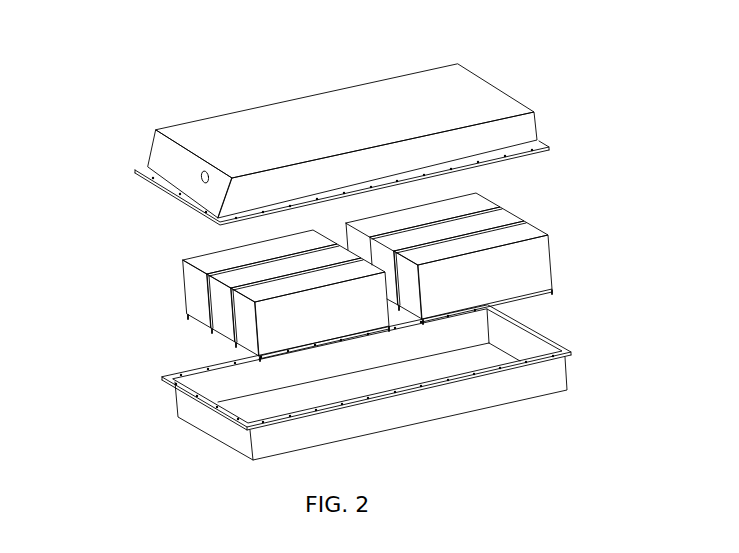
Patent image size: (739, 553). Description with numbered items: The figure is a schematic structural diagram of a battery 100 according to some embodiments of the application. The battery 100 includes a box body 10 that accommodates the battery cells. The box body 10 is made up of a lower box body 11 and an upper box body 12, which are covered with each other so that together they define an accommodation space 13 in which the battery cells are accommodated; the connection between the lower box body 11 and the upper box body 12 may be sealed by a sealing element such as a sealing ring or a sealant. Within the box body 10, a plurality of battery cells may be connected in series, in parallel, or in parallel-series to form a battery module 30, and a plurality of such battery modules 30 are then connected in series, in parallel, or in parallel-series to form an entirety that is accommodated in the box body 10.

The battery 100 is at (335, 48).
The box body 10 is at (92, 272).
The lower box body 11 is at (175, 396).
The upper box body 12 is at (185, 173).
The accommodation space 13 is at (507, 345).
The battery module 30 is at (535, 263).